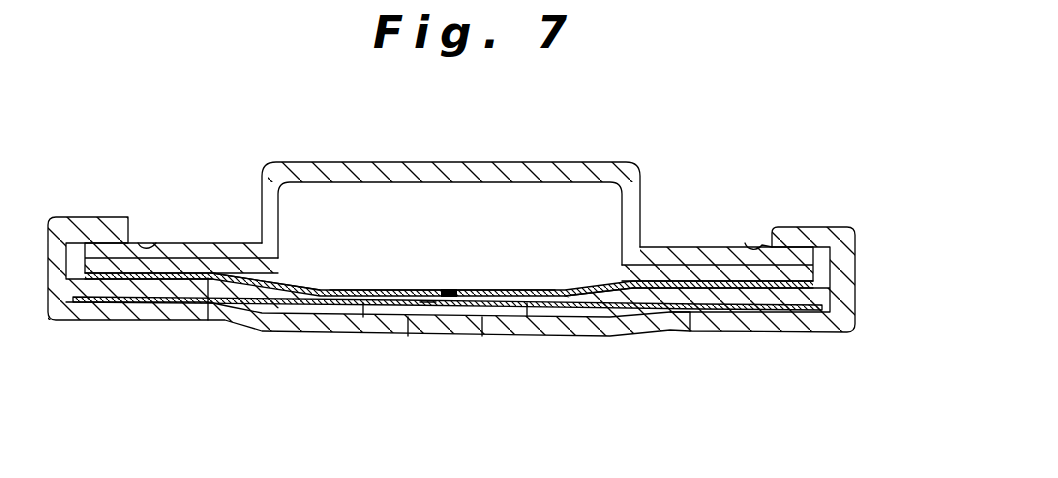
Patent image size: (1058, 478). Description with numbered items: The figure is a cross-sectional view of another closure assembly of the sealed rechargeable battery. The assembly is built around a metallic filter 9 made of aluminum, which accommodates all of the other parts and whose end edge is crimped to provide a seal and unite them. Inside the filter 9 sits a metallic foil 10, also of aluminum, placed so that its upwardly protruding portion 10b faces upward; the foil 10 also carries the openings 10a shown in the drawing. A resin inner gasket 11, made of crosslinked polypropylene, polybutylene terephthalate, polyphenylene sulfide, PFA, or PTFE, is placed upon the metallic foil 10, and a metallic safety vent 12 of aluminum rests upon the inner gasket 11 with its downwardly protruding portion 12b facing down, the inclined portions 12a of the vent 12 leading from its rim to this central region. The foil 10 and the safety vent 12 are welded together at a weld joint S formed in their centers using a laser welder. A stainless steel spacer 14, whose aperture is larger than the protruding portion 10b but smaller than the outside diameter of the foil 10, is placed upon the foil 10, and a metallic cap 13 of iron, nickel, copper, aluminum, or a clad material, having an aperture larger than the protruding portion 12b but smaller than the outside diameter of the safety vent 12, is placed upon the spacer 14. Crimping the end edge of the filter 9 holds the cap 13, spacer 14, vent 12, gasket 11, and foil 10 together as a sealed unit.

The metallic filter 9 is at (712, 316).
The metallic foil 10 is at (449, 373).
The openings of support plate 10a is at (527, 303).
The protruding portion 10b is at (427, 302).
The inner gasket 11 is at (153, 241).
The safety vent 12 is at (449, 297).
The inclined portion of diaphragm 12a is at (328, 288).
The protruding portion 12b is at (490, 288).
The metallic cap 13 is at (622, 178).
The spacer 14 is at (168, 262).
The weld joint S is at (449, 288).